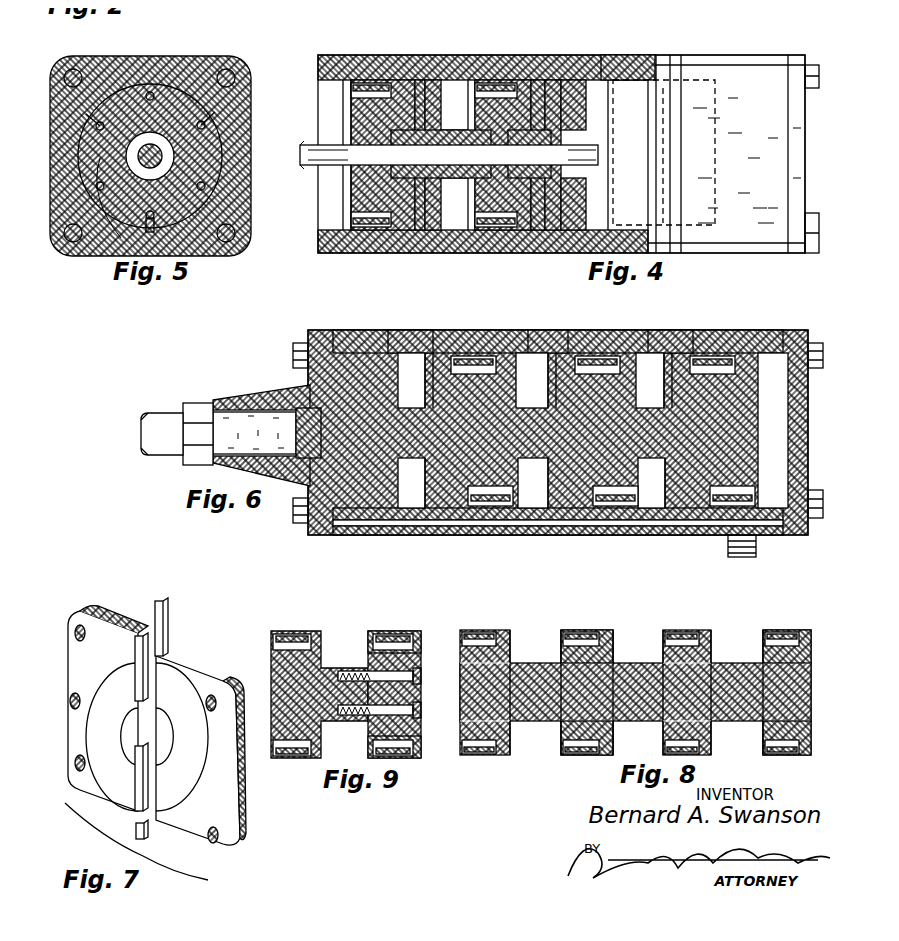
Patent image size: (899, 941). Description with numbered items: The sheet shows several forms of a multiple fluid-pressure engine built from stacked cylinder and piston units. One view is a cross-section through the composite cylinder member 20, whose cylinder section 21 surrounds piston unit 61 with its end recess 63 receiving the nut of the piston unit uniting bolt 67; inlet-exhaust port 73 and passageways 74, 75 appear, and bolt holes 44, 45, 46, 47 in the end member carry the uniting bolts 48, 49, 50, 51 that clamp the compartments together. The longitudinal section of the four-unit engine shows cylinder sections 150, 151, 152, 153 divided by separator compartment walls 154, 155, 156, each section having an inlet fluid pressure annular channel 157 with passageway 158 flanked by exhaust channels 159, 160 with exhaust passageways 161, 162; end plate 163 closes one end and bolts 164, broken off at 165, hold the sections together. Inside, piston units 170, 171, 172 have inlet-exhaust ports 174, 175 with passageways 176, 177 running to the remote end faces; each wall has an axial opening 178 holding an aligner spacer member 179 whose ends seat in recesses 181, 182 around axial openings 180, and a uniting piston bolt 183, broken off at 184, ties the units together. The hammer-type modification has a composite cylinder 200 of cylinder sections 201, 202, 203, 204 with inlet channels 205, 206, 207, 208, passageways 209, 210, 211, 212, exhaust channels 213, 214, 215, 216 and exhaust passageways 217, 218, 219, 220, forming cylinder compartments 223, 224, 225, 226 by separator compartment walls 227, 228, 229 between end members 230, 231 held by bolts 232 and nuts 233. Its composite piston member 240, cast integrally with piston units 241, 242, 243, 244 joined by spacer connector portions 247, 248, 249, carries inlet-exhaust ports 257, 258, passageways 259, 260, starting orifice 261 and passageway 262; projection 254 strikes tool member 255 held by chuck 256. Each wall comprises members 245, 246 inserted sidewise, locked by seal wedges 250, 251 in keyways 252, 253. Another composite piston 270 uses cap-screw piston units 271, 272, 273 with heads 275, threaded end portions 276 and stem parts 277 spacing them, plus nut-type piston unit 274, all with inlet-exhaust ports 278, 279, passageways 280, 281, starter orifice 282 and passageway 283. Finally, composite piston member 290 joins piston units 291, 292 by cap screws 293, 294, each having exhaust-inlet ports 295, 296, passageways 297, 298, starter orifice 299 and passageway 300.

In FIG. 5, the composite cylinder member 20 is at (160, 43).
In FIG. 5, the cylinder section 21 is at (242, 198).
In FIG. 5, the bolt hole 44 is at (68, 68).
In FIG. 5, the bolt hole 45 is at (214, 65).
In FIG. 5, the bolt hole 46 is at (80, 240).
In FIG. 5, the bolt hole 47 is at (232, 242).
In FIG. 5, the uniting bolt 48 is at (64, 62).
In FIG. 5, the uniting bolt 49 is at (213, 62).
In FIG. 5, the uniting bolt 50 is at (60, 236).
In FIG. 5, the uniting bolt 51 is at (228, 224).
In FIG. 5, the piston unit 61 is at (172, 90).
In FIG. 5, the recess 63 is at (172, 140).
In FIG. 5, the piston unit uniting bolt 67 is at (170, 150).
In FIG. 5, the inlet-exhaust port 73 is at (160, 135).
In FIG. 5, the passageway 74 is at (96, 182).
In FIG. 5, the passageway 75 is at (196, 118).
In FIG. 4, the cylinder section 150 is at (726, 50).
In FIG. 4, the cylinder section 151 is at (675, 50).
In FIG. 4, the cylinder section 152 is at (450, 245).
In FIG. 4, the cylinder section 153 is at (385, 240).
In FIG. 4, the separator compartment wall 154 is at (714, 56).
In FIG. 4, the separator compartment wall 155 is at (550, 245).
In FIG. 4, the separator compartment wall 156 is at (420, 245).
In FIG. 4, the inlet fluid pressure annular channel 157 is at (378, 47).
In FIG. 4, the inlet passageway 158 is at (366, 52).
In FIG. 4, the exhaust channel 159 is at (596, 50).
In FIG. 4, the exhaust channel 160 is at (420, 47).
In FIG. 4, the exhaust passageway 161 is at (339, 47).
In FIG. 4, the exhaust passageway 162 is at (408, 55).
In FIG. 4, the end plate 163 is at (785, 245).
In FIG. 4, the bolt 164 is at (804, 57).
In FIG. 4, the broken-off point 165 is at (308, 72).
In FIG. 4, the piston unit 170 is at (755, 70).
In FIG. 4, the piston unit 171 is at (660, 128).
In FIG. 4, the piston unit 172 is at (582, 160).
In FIG. 4, the inlet-exhaust port 174 is at (454, 96).
In FIG. 4, the inlet-exhaust port 175 is at (350, 200).
In FIG. 4, the passageway 176 is at (350, 90).
In FIG. 4, the passageway 177 is at (447, 185).
In FIG. 4, the axial opening 178 is at (424, 145).
In FIG. 4, the aligner spacer member 179 is at (447, 125).
In FIG. 4, the axial opening 180 is at (375, 150).
In FIG. 4, the recess 181 is at (350, 128).
In FIG. 4, the recess 182 is at (386, 145).
In FIG. 4, the uniting piston bolt 183 is at (350, 165).
In FIG. 4, the broken-off point 184 is at (300, 150).
In FIG. 6, the composite cylinder 200 is at (540, 555).
In FIG. 6, the cylinder section 201 is at (408, 325).
In FIG. 6, the cylinder section 202 is at (534, 325).
In FIG. 6, the cylinder section 203 is at (668, 325).
In FIG. 6, the cylinder section 204 is at (786, 325).
In FIG. 6, the inlet fluid pressure medium channel 205 is at (368, 325).
In FIG. 6, the inlet fluid pressure medium channel 206 is at (502, 325).
In FIG. 6, the inlet fluid pressure medium channel 207 is at (616, 325).
In FIG. 6, the inlet fluid pressure medium channel 208 is at (768, 325).
In FIG. 6, the inlet passageway 209 is at (350, 527).
In FIG. 6, the inlet passageway 210 is at (496, 527).
In FIG. 6, the inlet passageway 211 is at (590, 518).
In FIG. 6, the inlet passageway 212 is at (720, 535).
In FIG. 6, the exhaust channel 213 is at (348, 322).
In FIG. 6, the exhaust channel 214 is at (476, 322).
In FIG. 6, the exhaust channel 215 is at (612, 322).
In FIG. 6, the exhaust channel 216 is at (735, 322).
In FIG. 6, the exhaust passageway 217 is at (333, 322).
In FIG. 6, the exhaust passageway 218 is at (486, 322).
In FIG. 6, the exhaust passageway 219 is at (600, 322).
In FIG. 6, the exhaust passageway 220 is at (760, 322).
In FIG. 6, the cylinder compartment 223 is at (400, 322).
In FIG. 6, the cylinder compartment 224 is at (528, 322).
In FIG. 6, the cylinder compartment 225 is at (670, 322).
In FIG. 6, the cylinder compartment 226 is at (792, 322).
In FIG. 6, the separator compartment wall 227 is at (432, 527).
In FIG. 6, the separator compartment wall 228 is at (534, 527).
In FIG. 6, the separator compartment wall 229 is at (652, 527).
In FIG. 6, the end member 230 is at (300, 370).
In FIG. 6, the end member 231 is at (790, 522).
In FIG. 6, the bolt 232 is at (283, 338).
In FIG. 6, the nut 233 is at (285, 350).
In FIG. 6, the composite piston member 240 is at (757, 428).
In FIG. 6, the piston unit 241 is at (315, 325).
In FIG. 6, the piston unit 242 is at (455, 325).
In FIG. 6, the piston unit 243 is at (594, 325).
In FIG. 6, the piston unit 244 is at (700, 325).
In FIG. 7, the separator wall member 245 is at (95, 606).
In FIG. 7, the separator wall member 246 is at (190, 668).
In FIG. 6, the spacer connector portion 247 is at (385, 395).
In FIG. 6, the spacer connector portion 248 is at (535, 403).
In FIG. 6, the spacer connector portion 249 is at (653, 398).
In FIG. 7, the connector or seal wedge 250 is at (160, 612).
In FIG. 7, the connector or seal wedge 251 is at (140, 830).
In FIG. 7, the keyway 252 is at (131, 626).
In FIG. 7, the keyway 253 is at (165, 650).
In FIG. 6, the projection 254 is at (260, 390).
In FIG. 6, the tool member 255 is at (175, 410).
In FIG. 6, the extension or chuck 256 is at (215, 390).
In FIG. 6, the inlet-exhaust port 257 is at (315, 420).
In FIG. 6, the inlet-exhaust port 258 is at (325, 430).
In FIG. 6, the passageway 259 is at (320, 380).
In FIG. 6, the passageway 260 is at (485, 480).
In FIG. 6, the starting orifice 261 is at (300, 430).
In FIG. 6, the passageway 262 is at (490, 382).
In FIG. 8, the composite piston 270 is at (700, 596).
In FIG. 8, the piston unit 271 is at (502, 640).
In FIG. 8, the piston unit 272 is at (605, 632).
In FIG. 8, the piston unit 273 is at (705, 628).
In FIG. 8, the piston unit 274 is at (800, 622).
In FIG. 8, the head 275 is at (655, 650).
In FIG. 8, the threaded end portion 276 is at (655, 725).
In FIG. 8, the stem part 277 is at (553, 647).
In FIG. 8, the inlet-exhaust port 278 is at (490, 625).
In FIG. 8, the inlet-exhaust port 279 is at (470, 747).
In FIG. 8, the passageway 280 is at (475, 622).
In FIG. 8, the passageway 281 is at (490, 745).
In FIG. 8, the starter orifice 282 is at (452, 645).
In FIG. 8, the passageway 283 is at (502, 655).
In FIG. 9, the composite piston member 290 is at (395, 606).
In FIG. 9, the piston unit 291 is at (316, 625).
In FIG. 9, the piston unit 292 is at (400, 625).
In FIG. 9, the cap screw 293 is at (410, 665).
In FIG. 9, the cap screw 294 is at (410, 712).
In FIG. 9, the exhaust-inlet port 295 is at (292, 625).
In FIG. 9, the exhaust-inlet port 296 is at (362, 745).
In FIG. 9, the passageway 297 is at (275, 625).
In FIG. 9, the passageway 298 is at (360, 728).
In FIG. 9, the starter orifice 299 is at (358, 642).
In FIG. 9, the passageway 300 is at (310, 652).